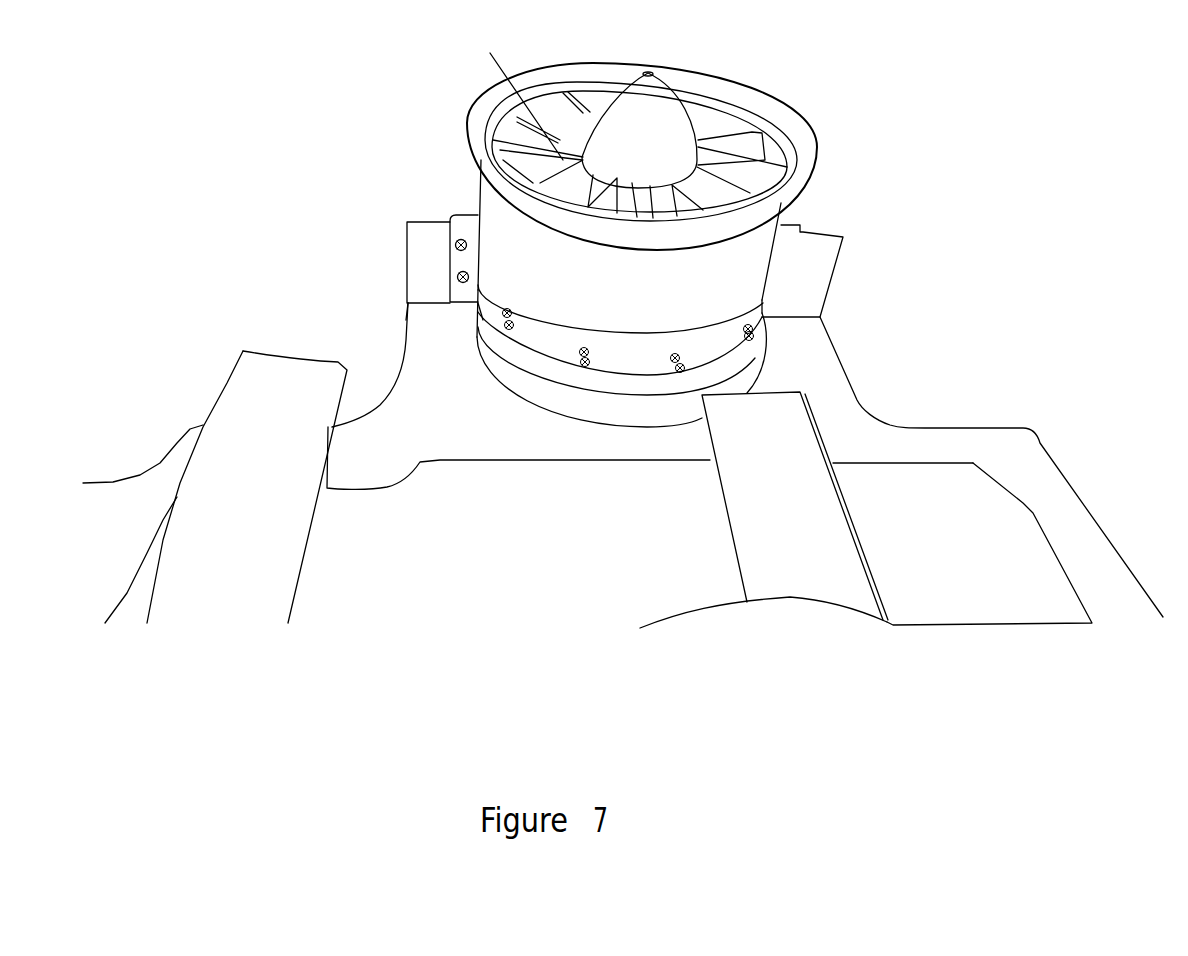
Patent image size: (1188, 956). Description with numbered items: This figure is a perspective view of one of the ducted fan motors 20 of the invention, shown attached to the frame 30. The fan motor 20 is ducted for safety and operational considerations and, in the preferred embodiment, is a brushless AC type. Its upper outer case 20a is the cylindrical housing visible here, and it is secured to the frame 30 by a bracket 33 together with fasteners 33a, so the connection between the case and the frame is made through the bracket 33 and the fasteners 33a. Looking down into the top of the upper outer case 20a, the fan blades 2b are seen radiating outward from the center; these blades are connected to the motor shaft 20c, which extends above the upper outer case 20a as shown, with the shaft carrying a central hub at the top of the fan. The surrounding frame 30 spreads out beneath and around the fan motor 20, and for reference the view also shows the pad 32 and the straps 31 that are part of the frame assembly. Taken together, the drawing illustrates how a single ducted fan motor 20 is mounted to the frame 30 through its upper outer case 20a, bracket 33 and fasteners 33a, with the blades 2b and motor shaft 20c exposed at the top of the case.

The fan blades 2b is at (540, 160).
The fan motor 20 is at (875, 168).
The upper outer case 20a is at (710, 265).
The motor shaft 20c is at (670, 113).
The frame 30 is at (423, 400).
The straps 31 is at (265, 380).
The pad 32 is at (1017, 553).
The bracket 33 is at (423, 247).
The fasteners 33a is at (466, 272).